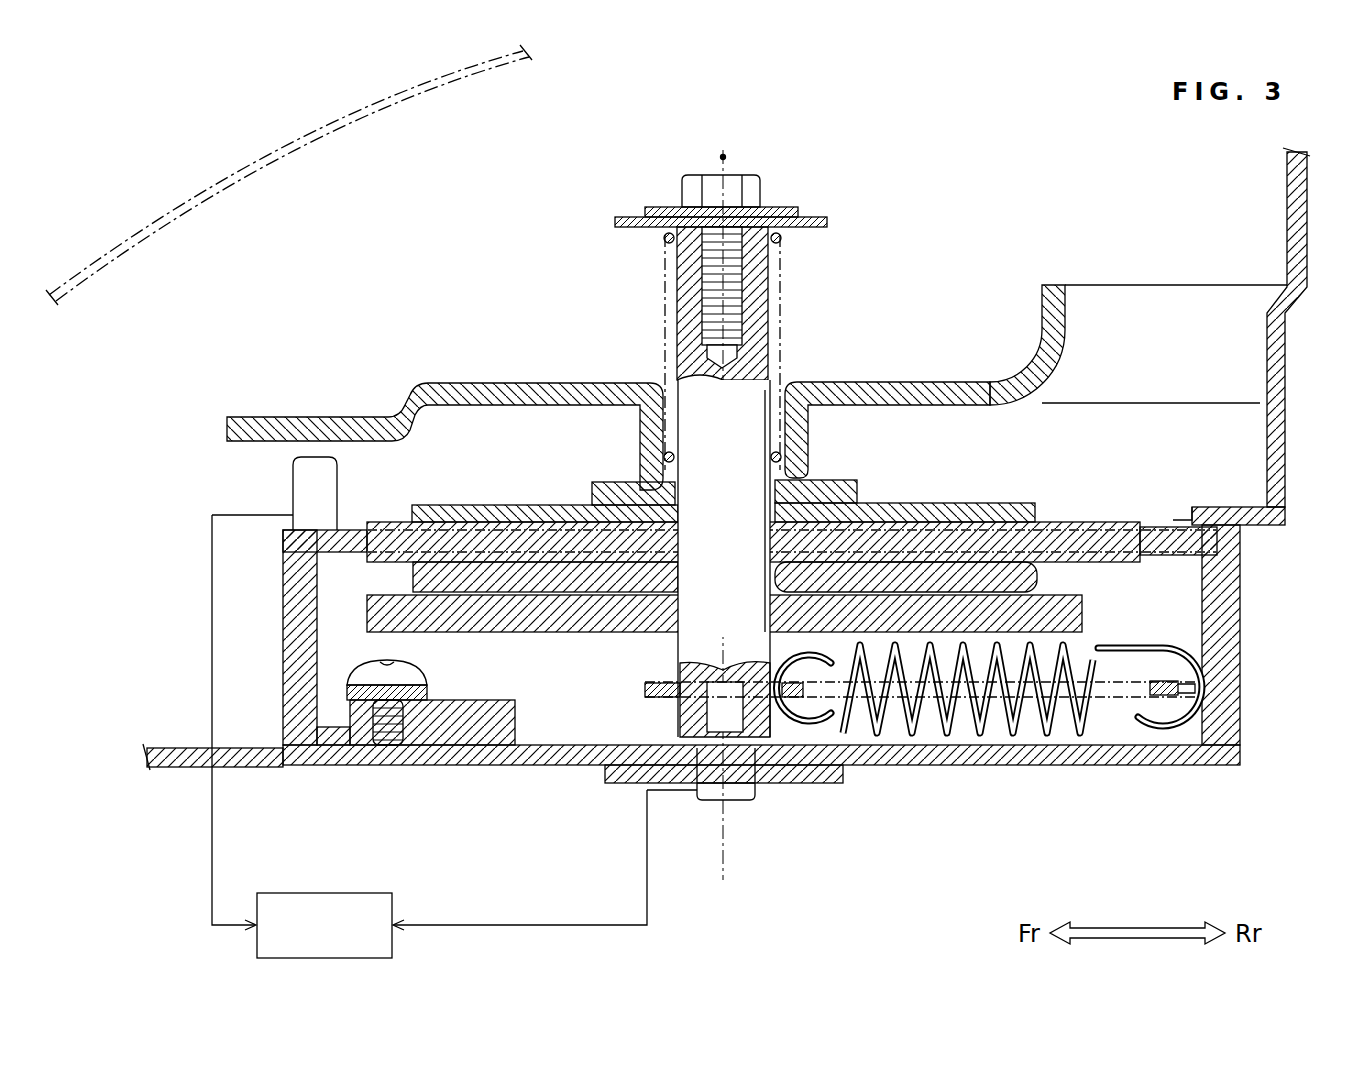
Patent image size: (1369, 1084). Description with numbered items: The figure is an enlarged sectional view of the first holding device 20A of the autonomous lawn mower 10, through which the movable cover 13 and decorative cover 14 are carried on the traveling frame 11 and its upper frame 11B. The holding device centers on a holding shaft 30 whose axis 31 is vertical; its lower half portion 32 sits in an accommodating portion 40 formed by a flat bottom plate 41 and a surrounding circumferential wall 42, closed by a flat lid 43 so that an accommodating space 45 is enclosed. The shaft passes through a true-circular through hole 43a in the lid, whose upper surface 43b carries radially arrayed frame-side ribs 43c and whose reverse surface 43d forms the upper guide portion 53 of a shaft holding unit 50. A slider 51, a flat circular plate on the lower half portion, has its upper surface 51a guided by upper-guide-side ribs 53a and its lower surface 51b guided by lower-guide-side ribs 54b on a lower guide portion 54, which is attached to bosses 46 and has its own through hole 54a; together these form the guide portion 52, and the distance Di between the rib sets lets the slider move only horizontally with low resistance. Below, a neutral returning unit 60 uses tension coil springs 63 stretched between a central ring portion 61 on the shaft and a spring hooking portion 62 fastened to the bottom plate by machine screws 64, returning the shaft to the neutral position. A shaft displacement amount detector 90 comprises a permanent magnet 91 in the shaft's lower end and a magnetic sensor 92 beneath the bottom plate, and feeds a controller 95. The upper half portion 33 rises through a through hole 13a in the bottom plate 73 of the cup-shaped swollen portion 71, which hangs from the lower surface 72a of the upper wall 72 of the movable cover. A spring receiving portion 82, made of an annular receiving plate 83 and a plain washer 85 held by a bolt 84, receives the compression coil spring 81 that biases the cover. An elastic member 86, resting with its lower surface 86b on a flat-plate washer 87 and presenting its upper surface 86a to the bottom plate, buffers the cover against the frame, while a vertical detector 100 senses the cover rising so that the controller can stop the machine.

The autonomous lawn mower 10 is at (135, 135).
The decorative cover 14 is at (345, 115).
The first holding device 20A is at (436, 380).
The vertical detector 100 is at (293, 480).
The upper frame 11B is at (170, 745).
The traveling frame 11 is at (186, 695).
The controller 95 is at (325, 893).
The accommodating portion 40 is at (781, 705).
The bottom plate 41 is at (761, 687).
The circumferential wall 42 is at (1238, 684).
The bosses 46 is at (470, 735).
The movable cover 13 is at (975, 360).
The through hole 13a is at (685, 470).
The upper wall 72 is at (887, 398).
The lower surface 72a is at (860, 415).
The holding shaft 30 is at (720, 475).
The upper half portion 33 is at (770, 330).
The bolt 84 is at (690, 185).
The spring receiving portion 82 is at (676, 149).
The plain washer 85 is at (650, 210).
The annular receiving plate 83 is at (618, 220).
The compression coil spring 81 is at (665, 290).
The axis 31 is at (726, 156).
The elastic member 86 is at (545, 510).
The flat-plate washer 87 is at (458, 505).
The bottom plate 73 is at (608, 490).
The upper surface 86a is at (600, 490).
The lower surface 86b is at (570, 520).
The guide portion 52 is at (801, 475).
The through hole 43a is at (830, 495).
The lower guide portion 54 is at (1040, 595).
The upper guide portion 53 is at (1080, 560).
The lid 43 is at (842, 501).
The upper surface 43b is at (1140, 525).
The frame-side ribs 43c is at (678, 440).
The reverse surface 43d is at (935, 540).
The lower half portion 32 is at (669, 608).
The through hole 54a is at (700, 660).
The upper-guide-side ribs 53a is at (800, 562).
The lower-guide-side ribs 54b is at (805, 602).
The distance Di is at (1140, 562).
The accommodating space 45 is at (1100, 628).
The neutral returning unit 60 is at (923, 663).
The tension coil springs 63 is at (1010, 770).
The central ring portion 61 is at (880, 745).
The spring hooking portion 62 is at (1100, 740).
The slider 51 is at (920, 624).
The upper surface 51a is at (995, 560).
The lower surface 51b is at (971, 774).
The shaft holding unit 50 is at (1180, 640).
The machine screws 64 is at (385, 745).
The shaft displacement amount detector 90 is at (732, 833).
The permanent magnet 91 is at (740, 790).
The magnetic sensor 92 is at (716, 824).
The swollen portion 71 is at (648, 470).